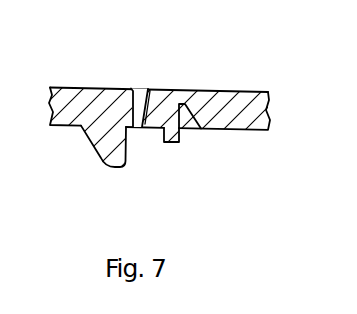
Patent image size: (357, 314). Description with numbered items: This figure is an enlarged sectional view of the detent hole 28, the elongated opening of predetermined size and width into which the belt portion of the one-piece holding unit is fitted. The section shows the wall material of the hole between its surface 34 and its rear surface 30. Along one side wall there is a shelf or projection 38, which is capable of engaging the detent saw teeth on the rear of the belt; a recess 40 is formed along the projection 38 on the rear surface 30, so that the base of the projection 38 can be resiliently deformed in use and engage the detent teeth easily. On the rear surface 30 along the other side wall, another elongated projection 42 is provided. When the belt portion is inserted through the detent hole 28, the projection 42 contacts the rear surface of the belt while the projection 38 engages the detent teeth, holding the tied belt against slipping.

The rear surface 30 is at (63, 126).
The surface 34 is at (70, 86).
The detent hole 28 is at (146, 96).
The elongated projection 42 is at (109, 168).
The projection 38 is at (150, 128).
The recess 40 is at (190, 128).